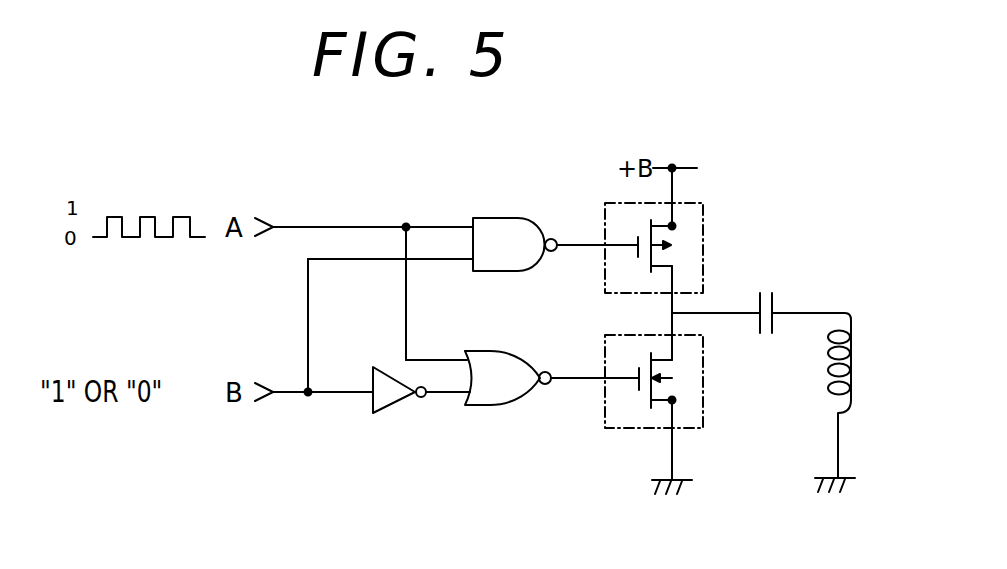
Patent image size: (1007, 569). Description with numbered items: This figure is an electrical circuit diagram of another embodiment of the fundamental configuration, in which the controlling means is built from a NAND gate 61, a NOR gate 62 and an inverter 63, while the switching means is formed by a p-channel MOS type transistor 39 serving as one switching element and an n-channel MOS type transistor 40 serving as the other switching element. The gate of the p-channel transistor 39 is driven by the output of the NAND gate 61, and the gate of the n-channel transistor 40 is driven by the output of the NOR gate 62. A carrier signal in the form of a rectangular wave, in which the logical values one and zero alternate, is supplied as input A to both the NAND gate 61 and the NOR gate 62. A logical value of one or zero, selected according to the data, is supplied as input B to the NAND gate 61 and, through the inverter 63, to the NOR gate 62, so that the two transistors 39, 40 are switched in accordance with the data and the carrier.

The NAND gate 61 is at (546, 198).
The NOR gate 62 is at (544, 427).
The inverter 63 is at (415, 435).
The p-channel MOS type transistor 39 is at (625, 253).
The n-channel MOS type transistor 40 is at (620, 424).